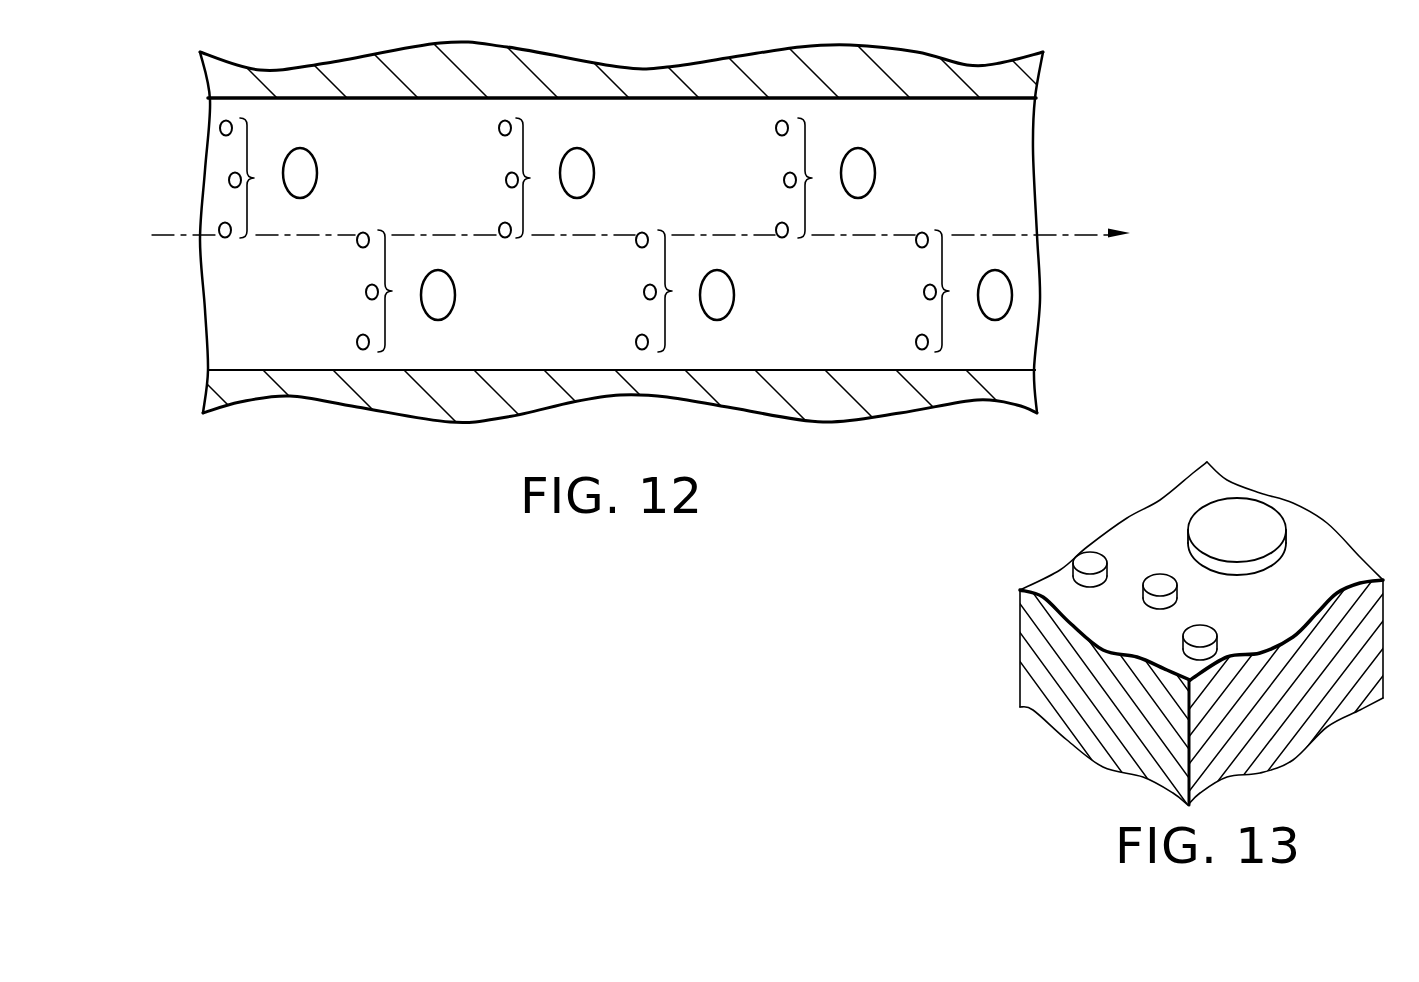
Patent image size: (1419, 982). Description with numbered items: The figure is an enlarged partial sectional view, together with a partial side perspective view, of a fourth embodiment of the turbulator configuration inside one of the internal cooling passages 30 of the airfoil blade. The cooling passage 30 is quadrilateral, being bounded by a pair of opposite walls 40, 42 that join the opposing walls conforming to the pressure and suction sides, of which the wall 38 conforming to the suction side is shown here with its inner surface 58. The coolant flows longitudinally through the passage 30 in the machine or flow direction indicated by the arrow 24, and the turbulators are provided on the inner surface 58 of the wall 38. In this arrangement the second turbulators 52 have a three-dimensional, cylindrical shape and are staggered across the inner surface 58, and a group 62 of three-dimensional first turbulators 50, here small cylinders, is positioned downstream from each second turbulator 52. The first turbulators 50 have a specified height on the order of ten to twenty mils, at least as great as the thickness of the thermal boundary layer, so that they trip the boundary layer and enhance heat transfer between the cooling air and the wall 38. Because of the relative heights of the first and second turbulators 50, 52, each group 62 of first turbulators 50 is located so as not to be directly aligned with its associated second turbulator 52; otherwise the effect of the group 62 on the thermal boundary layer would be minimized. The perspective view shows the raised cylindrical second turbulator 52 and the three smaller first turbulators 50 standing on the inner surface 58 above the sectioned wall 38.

In FIG. 12, the machine direction 24 is at (1077, 237).
In FIG. 12, the internal cooling passage 30 is at (200, 327).
In FIG. 12, the wall 38 is at (590, 357).
In FIG. 13, the wall 38 is at (1077, 735).
In FIG. 12, the wall 40 is at (410, 62).
In FIG. 12, the wall 42 is at (527, 397).
In FIG. 12, the first turbulators 50 is at (221, 224).
In FIG. 13, the first turbulators 50 is at (1078, 577).
In FIG. 12, the second turbulators 52 is at (308, 173).
In FIG. 13, the second turbulators 52 is at (1252, 512).
In FIG. 12, the inner surface 58 is at (833, 301).
In FIG. 13, the inner surface 58 is at (1301, 585).
In FIG. 12, the group of first turbulators 62 is at (254, 178).
In FIG. 13, the group of first turbulators 62 is at (1100, 627).